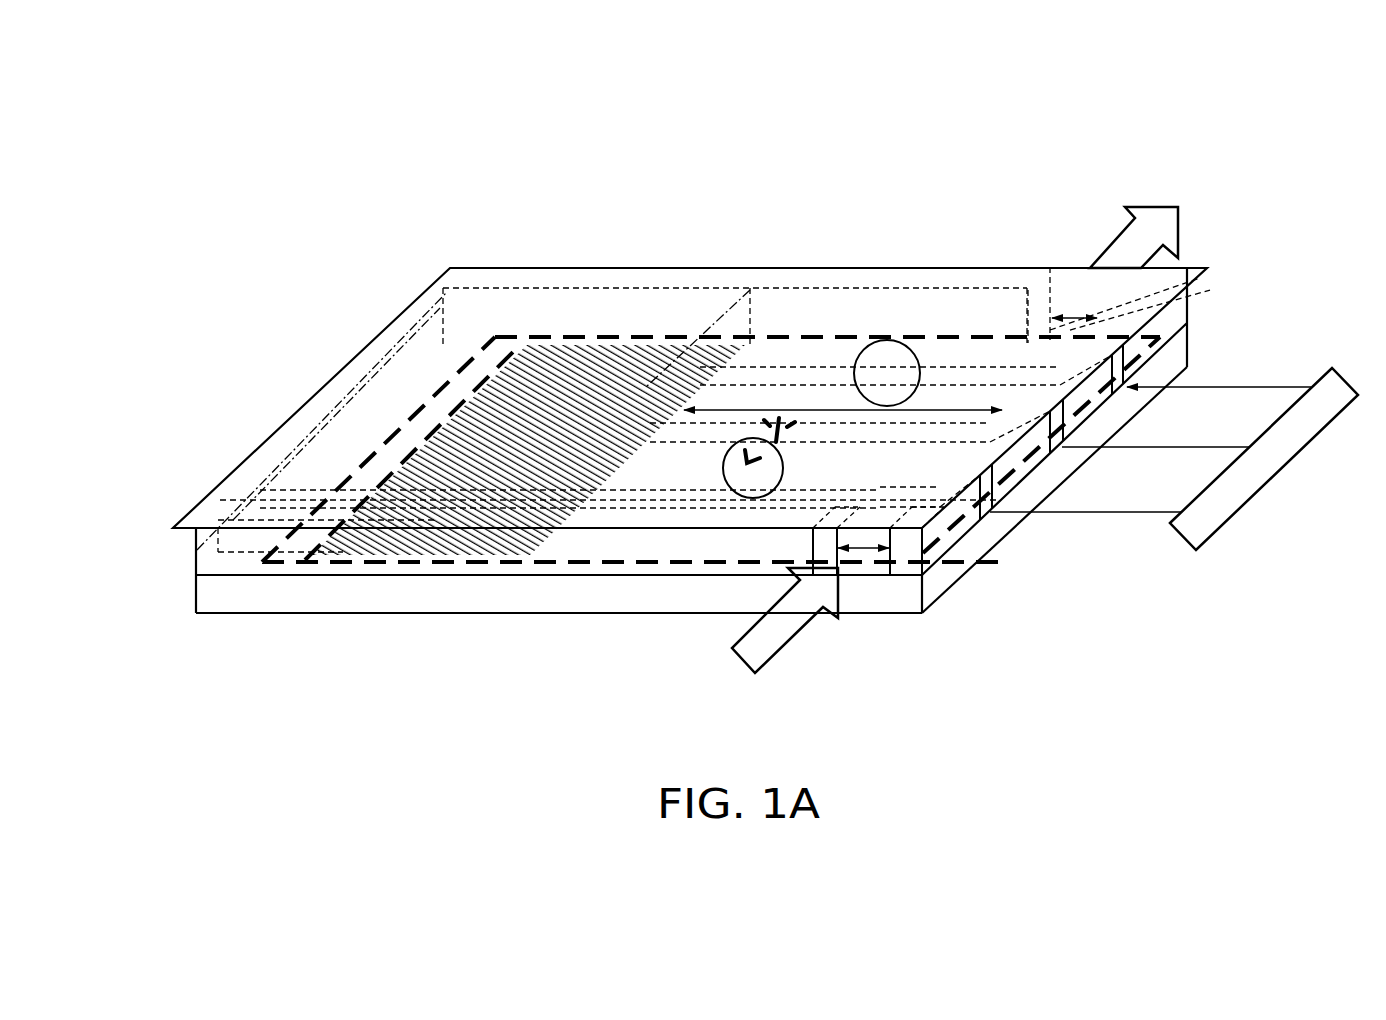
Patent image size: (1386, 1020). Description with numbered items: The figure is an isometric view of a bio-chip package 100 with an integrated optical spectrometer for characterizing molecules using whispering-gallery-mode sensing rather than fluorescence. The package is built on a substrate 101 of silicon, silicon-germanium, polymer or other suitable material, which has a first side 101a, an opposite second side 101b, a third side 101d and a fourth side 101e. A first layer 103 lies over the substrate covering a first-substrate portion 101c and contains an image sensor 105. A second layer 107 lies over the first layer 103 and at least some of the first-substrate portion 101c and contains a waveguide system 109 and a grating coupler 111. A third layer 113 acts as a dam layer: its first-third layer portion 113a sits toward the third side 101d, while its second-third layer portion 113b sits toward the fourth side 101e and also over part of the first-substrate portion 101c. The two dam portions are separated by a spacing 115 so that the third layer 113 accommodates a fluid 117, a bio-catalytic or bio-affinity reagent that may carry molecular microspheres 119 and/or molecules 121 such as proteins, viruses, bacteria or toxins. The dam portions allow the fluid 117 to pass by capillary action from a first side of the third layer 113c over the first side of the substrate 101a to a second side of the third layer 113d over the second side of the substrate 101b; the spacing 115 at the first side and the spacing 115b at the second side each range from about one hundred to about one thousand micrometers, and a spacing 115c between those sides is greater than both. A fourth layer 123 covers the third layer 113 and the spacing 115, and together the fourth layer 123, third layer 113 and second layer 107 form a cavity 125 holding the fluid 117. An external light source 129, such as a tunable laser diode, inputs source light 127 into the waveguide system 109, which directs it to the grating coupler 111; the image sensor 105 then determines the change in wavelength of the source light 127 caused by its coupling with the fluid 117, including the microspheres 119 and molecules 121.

The bio-chip package 100 is at (436, 162).
The substrate 101 is at (337, 598).
The first side of substrate 101a is at (924, 594).
The second side of substrate 101b is at (1190, 345).
The first-substrate portion 101c is at (457, 375).
The third side of substrate 101d is at (195, 595).
The fourth side of substrate 101e is at (992, 548).
The first layer 103 is at (797, 395).
The image sensor 105 is at (380, 470).
The second layer 107 is at (820, 355).
The waveguide system 109 is at (977, 375).
The grating coupler 111 is at (610, 400).
The third layer 113 is at (218, 540).
The first-third layer portion 113a is at (378, 383).
The second-third layer portion 113b is at (1167, 320).
The first side of third layer 113c is at (740, 662).
The second side of third layer 113d is at (1212, 178).
The spacing 115 is at (852, 552).
The spacing on second side 115b is at (1077, 312).
The spacing between first and second sides 115c is at (840, 405).
The fluid 117 is at (837, 470).
The molecular microspheres 119 is at (892, 363).
The molecules 121 is at (779, 413).
The fourth layer 123 is at (247, 450).
The cavity 125 is at (673, 470).
The source light 127 is at (1205, 442).
The external light source 129 is at (1210, 536).